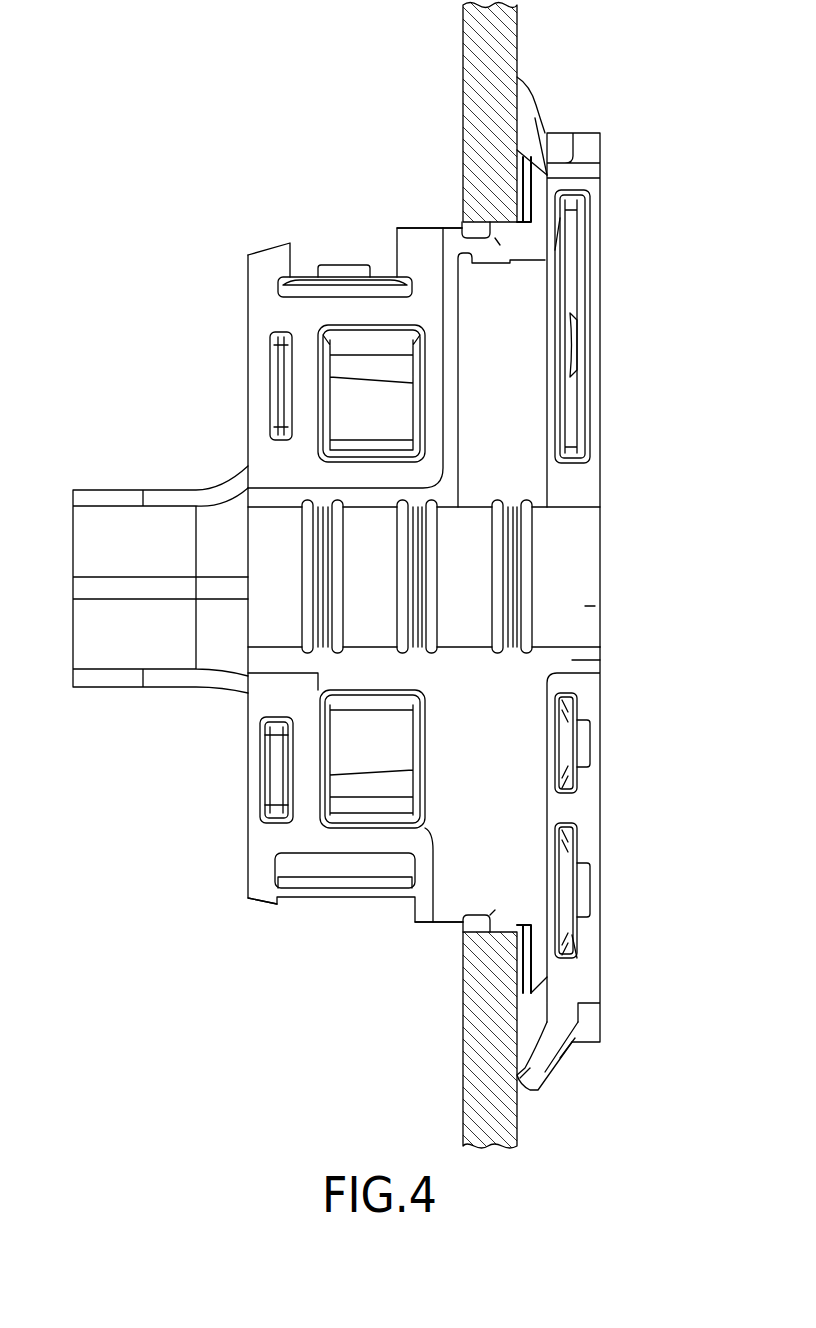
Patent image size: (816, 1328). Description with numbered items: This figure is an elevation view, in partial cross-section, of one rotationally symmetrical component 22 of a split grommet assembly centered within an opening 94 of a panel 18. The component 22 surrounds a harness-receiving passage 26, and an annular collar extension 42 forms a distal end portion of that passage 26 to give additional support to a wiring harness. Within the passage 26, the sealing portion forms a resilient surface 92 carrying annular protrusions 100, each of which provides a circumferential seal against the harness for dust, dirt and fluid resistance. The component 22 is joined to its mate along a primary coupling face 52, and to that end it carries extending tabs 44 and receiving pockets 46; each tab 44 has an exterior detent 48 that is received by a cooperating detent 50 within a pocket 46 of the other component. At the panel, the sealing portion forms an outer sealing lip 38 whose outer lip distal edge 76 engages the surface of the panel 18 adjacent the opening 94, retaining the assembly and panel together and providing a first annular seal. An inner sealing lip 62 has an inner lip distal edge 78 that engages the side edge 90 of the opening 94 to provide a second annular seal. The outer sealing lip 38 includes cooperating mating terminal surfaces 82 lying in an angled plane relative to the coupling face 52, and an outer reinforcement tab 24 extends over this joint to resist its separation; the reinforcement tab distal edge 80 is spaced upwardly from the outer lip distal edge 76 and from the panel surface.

The panel 18 is at (478, 45).
The rotationally symmetrical component 22 is at (287, 145).
The outer reinforcement tab 24 is at (558, 1068).
The harness-receiving passage 26 is at (558, 575).
The outer sealing lip 38 is at (543, 110).
The annular collar extension 42 is at (105, 490).
The extending tab 44 is at (300, 275).
The receiving pocket 46 is at (575, 270).
The detent 48 is at (343, 272).
The detent 50 is at (305, 895).
The primary coupling face 52 is at (572, 660).
The inner sealing lip 62 is at (510, 222).
The outer lip distal edge 76 is at (520, 80).
The inner lip distal edge 78 is at (560, 215).
The reinforcement tab distal edge 80 is at (523, 1077).
The cooperating mating terminal surface 82 is at (538, 128).
The side edge 90 is at (465, 230).
The resilient surface 92 is at (585, 606).
The opening 94 is at (495, 238).
The annular protrusion 100 is at (415, 505).